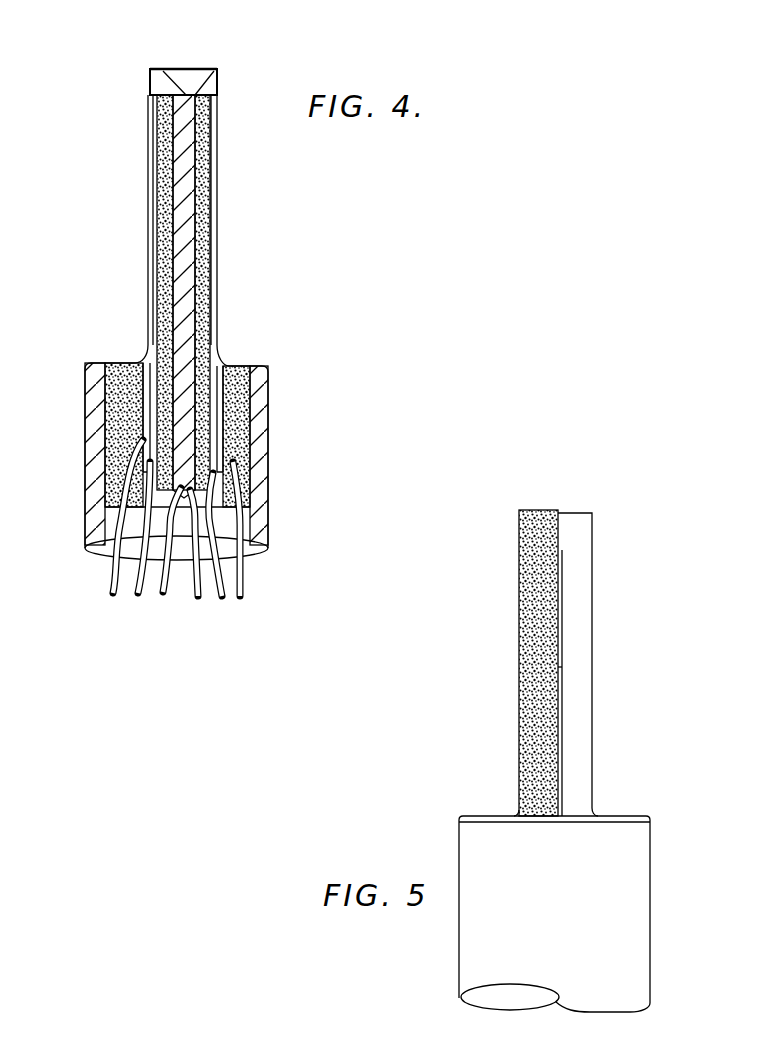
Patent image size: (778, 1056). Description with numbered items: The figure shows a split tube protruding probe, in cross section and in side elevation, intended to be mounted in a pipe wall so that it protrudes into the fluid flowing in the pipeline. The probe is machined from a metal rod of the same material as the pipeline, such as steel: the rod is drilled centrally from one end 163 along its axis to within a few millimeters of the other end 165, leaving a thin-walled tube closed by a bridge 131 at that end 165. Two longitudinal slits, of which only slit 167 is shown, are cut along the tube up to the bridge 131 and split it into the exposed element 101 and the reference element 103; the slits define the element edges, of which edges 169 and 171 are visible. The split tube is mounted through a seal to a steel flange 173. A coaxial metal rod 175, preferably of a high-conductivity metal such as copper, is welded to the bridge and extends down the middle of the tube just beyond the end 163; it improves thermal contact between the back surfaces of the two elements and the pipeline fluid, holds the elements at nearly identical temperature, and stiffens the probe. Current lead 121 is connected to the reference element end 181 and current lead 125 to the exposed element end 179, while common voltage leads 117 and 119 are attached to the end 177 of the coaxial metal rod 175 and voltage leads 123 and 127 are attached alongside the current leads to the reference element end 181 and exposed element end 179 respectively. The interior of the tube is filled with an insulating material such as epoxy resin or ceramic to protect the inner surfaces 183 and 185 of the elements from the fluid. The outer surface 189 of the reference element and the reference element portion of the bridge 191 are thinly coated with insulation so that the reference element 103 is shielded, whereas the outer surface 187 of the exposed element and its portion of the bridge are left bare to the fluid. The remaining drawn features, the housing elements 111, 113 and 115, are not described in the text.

In FIG. 4, the reference element portion of the bridge 191 is at (163, 66).
In FIG. 4, the bridge 131 is at (186, 94).
In FIG. 4, the other end of the rod 165 is at (234, 82).
In FIG. 4, the outer tube 113 is at (150, 117).
In FIG. 5, the outer tube 113 is at (527, 755).
In FIG. 4, the coaxial metal rod 175 is at (185, 150).
In FIG. 4, the inner surface 185 is at (160, 183).
In FIG. 4, the inner surface 183 is at (197, 186).
In FIG. 4, the reference element 103 is at (150, 240).
In FIG. 4, the exposed element 101 is at (217, 233).
In FIG. 5, the exposed element 101 is at (585, 688).
In FIG. 4, the outer surface of the reference element 189 is at (150, 295).
In FIG. 4, the outer surface of the exposed element 187 is at (212, 280).
In FIG. 4, the housing 111 is at (240, 387).
In FIG. 4, the reference element end 181 is at (148, 442).
In FIG. 4, the housing wall 115 is at (95, 452).
In FIG. 4, the exposed element end 179 is at (220, 440).
In FIG. 4, the end of the rod 163 is at (217, 462).
In FIG. 4, the end of coaxial metal rod 177 is at (198, 482).
In FIG. 4, the voltage lead 123 is at (117, 597).
In FIG. 4, the current lead 121 is at (137, 597).
In FIG. 4, the common voltage lead 119 is at (163, 597).
In FIG. 4, the common voltage lead 117 is at (198, 600).
In FIG. 4, the current lead 125 is at (222, 600).
In FIG. 4, the voltage lead 127 is at (238, 597).
In FIG. 5, the slit 167 is at (562, 565).
In FIG. 5, the edge 169 is at (562, 667).
In FIG. 5, the edge 171 is at (560, 670).
In FIG. 5, the steel flange 173 is at (640, 897).